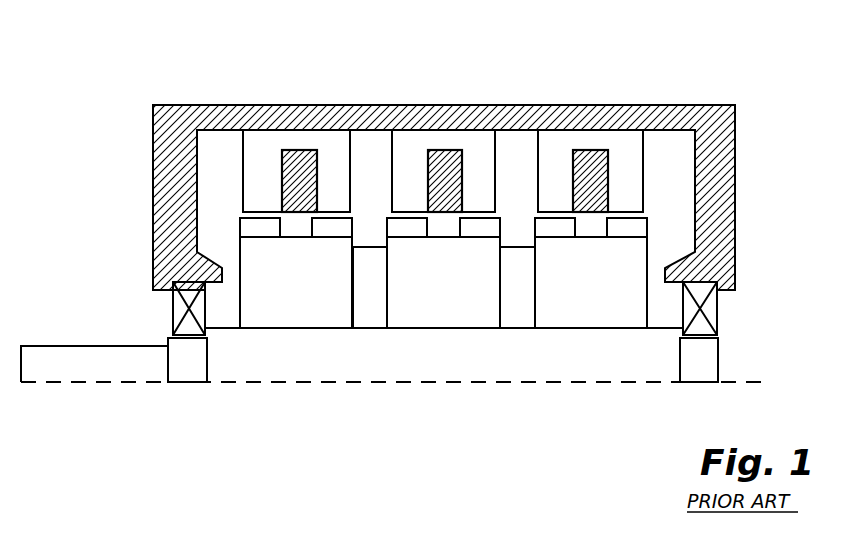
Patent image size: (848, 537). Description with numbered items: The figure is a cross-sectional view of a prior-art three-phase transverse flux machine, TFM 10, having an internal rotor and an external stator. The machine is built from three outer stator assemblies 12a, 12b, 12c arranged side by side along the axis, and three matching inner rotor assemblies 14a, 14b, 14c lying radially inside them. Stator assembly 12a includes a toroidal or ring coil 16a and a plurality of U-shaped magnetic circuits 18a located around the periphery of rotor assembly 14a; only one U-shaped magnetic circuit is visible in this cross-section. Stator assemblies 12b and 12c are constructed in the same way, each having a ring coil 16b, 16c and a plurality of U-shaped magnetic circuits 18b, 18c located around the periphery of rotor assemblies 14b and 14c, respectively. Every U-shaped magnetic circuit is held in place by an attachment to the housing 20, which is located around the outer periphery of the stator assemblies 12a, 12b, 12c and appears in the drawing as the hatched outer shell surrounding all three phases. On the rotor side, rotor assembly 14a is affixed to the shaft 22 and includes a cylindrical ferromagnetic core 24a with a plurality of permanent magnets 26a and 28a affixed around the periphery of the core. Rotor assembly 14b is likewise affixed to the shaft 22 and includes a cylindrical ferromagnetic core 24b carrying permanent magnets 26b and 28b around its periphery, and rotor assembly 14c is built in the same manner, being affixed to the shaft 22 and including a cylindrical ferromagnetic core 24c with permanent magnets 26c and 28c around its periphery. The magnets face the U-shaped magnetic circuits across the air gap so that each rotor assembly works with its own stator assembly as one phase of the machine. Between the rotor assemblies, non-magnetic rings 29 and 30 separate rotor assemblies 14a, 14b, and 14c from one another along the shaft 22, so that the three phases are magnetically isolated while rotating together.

The three-phase transverse flux machine 10 is at (297, 98).
The outer stator assembly 12a is at (314, 123).
The outer stator assembly 12b is at (481, 125).
The outer stator assembly 12c is at (629, 138).
The inner rotor assembly 14a is at (360, 285).
The inner rotor assembly 14b is at (507, 290).
The inner rotor assembly 14c is at (657, 296).
The ring coil 16a is at (297, 178).
The ring coil 16b is at (447, 170).
The ring coil 16c is at (605, 162).
The U-shaped magnetic circuit 18a is at (255, 140).
The U-shaped magnetic circuit 18b is at (405, 146).
The U-shaped magnetic circuit 18c is at (563, 141).
The housing 20 is at (725, 143).
The shaft 22 is at (117, 373).
The cylindrical ferromagnetic core 24a is at (287, 319).
The cylindrical ferromagnetic core 24b is at (443, 322).
The cylindrical ferromagnetic core 24c is at (591, 325).
The permanent magnet 26a is at (255, 229).
The permanent magnet 26b is at (410, 228).
The permanent magnet 26c is at (555, 228).
The permanent magnet 28a is at (331, 257).
The permanent magnet 28b is at (470, 228).
The permanent magnet 28c is at (627, 228).
The non-magnetic ring 29 is at (378, 297).
The non-magnetic ring 30 is at (525, 322).